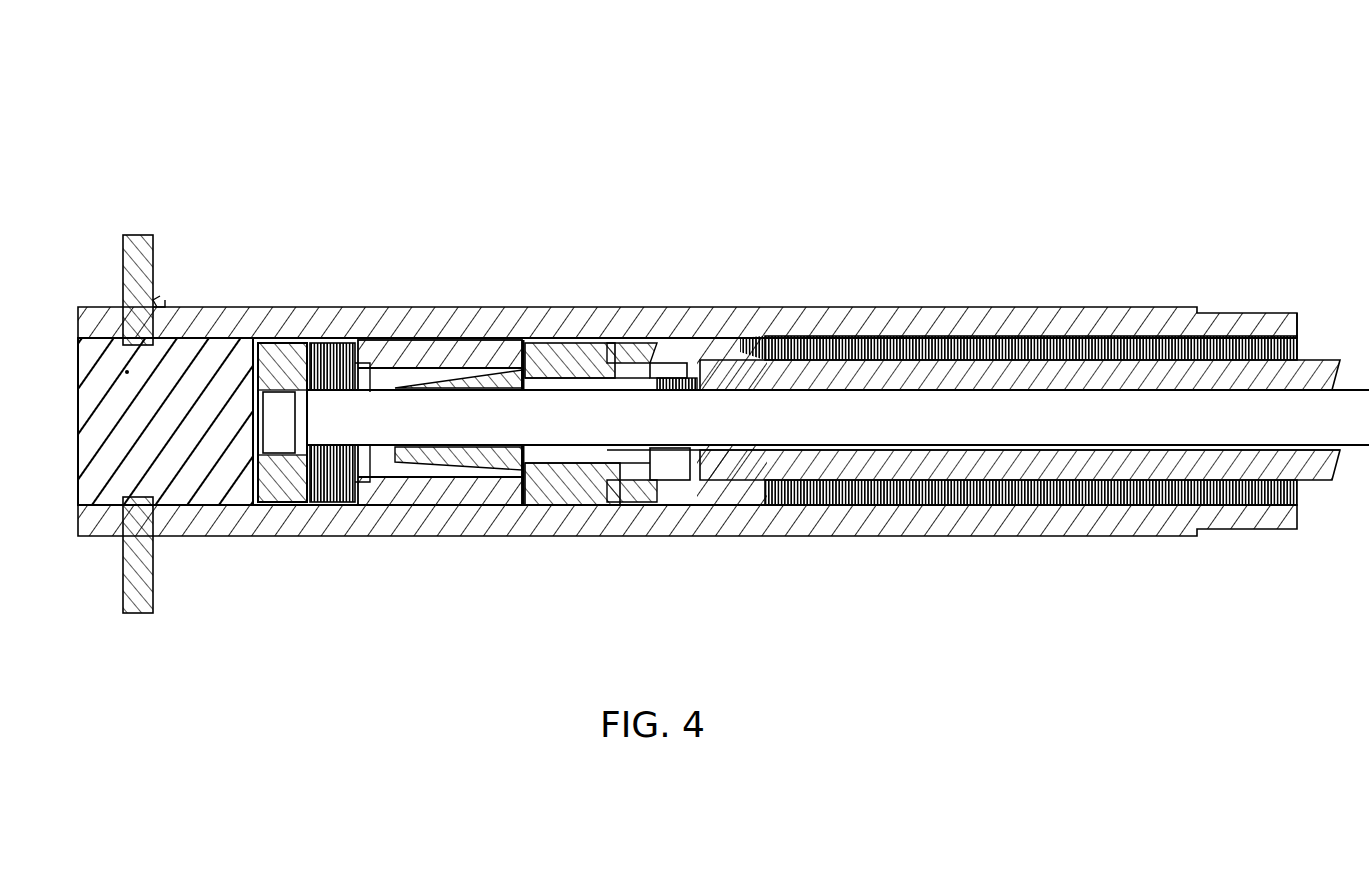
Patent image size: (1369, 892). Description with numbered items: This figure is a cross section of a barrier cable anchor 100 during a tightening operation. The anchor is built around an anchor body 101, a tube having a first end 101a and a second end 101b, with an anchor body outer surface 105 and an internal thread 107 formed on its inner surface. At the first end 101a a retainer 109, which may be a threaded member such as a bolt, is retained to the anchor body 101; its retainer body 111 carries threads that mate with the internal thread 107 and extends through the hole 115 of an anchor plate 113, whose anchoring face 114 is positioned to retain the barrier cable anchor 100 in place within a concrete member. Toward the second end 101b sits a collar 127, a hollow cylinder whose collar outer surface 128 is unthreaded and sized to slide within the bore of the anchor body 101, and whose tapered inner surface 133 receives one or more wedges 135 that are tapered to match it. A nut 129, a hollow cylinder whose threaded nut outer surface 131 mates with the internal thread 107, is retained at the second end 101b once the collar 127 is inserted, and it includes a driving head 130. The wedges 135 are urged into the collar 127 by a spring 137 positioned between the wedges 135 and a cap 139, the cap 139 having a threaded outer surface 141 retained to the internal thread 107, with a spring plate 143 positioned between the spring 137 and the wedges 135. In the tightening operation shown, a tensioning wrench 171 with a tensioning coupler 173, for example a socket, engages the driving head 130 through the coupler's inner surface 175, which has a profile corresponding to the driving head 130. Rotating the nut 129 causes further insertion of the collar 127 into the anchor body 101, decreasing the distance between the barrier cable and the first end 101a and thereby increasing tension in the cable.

The barrier cable anchor 100 is at (686, 124).
The anchor body 101 is at (800, 325).
The first end 101a is at (157, 307).
The second end 101b is at (1295, 307).
The anchor body outer surface 105 is at (878, 520).
The internal thread 107 is at (1022, 500).
The retainer 109 is at (78, 367).
The retainer body 111 is at (205, 515).
The anchor plate 113 is at (130, 237).
The anchoring face 114 is at (160, 276).
The hole 115 is at (127, 372).
The collar 127 is at (450, 355).
The collar outer surface 128 is at (460, 520).
The nut 129 is at (556, 345).
The driving head 130 is at (616, 345).
The nut outer surface 131 is at (565, 505).
The tapered inner surface 133 is at (503, 340).
The wedges 135 is at (396, 350).
The spring 137 is at (328, 345).
The cap 139 is at (280, 345).
The threaded outer surface 141 is at (280, 515).
The spring plate 143 is at (358, 495).
The tensioning wrench 171 is at (1150, 460).
The tensioning coupler 173 is at (732, 335).
The inner surface 175 is at (668, 345).